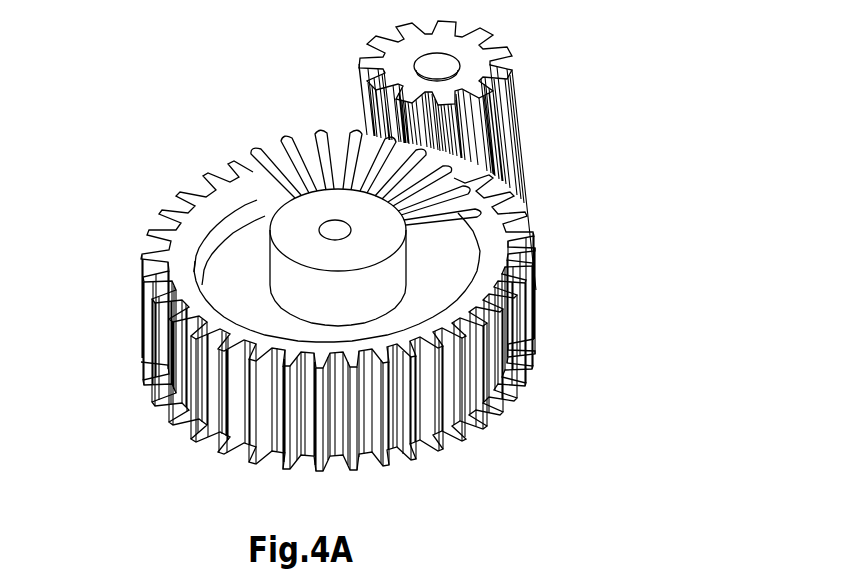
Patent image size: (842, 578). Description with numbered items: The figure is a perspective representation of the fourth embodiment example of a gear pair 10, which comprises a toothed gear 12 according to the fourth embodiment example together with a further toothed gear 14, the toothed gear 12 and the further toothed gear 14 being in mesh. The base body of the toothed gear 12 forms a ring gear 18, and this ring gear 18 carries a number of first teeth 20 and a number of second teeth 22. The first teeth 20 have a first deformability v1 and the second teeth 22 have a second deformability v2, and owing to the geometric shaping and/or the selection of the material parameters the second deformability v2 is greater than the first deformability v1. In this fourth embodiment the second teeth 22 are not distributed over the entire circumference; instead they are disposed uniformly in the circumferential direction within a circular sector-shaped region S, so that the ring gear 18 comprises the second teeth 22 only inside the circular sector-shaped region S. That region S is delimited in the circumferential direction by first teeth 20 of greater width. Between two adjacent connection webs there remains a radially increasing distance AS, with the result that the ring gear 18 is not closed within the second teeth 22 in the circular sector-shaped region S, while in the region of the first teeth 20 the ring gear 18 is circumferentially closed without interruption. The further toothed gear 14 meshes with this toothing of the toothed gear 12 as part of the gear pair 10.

The gear pair 10 is at (369, 236).
The toothed gear 12 is at (135, 102).
The further toothed gear 14 is at (513, 123).
The ring gear 18 is at (417, 236).
The first teeth 20 is at (417, 316).
The second teeth 22 is at (326, 164).
The first deformability v1 is at (540, 331).
The second deformability v2 is at (326, 164).
The circular sector-shaped region S is at (342, 123).
The radially increasing distance AS is at (314, 143).